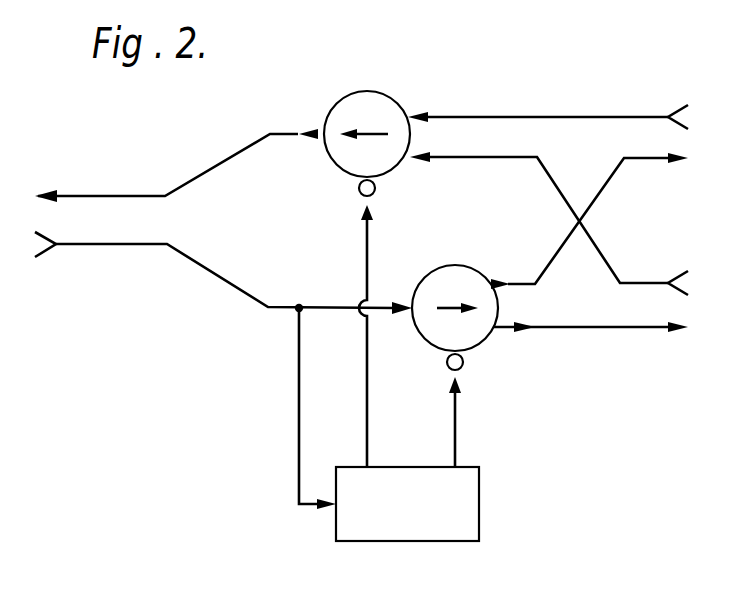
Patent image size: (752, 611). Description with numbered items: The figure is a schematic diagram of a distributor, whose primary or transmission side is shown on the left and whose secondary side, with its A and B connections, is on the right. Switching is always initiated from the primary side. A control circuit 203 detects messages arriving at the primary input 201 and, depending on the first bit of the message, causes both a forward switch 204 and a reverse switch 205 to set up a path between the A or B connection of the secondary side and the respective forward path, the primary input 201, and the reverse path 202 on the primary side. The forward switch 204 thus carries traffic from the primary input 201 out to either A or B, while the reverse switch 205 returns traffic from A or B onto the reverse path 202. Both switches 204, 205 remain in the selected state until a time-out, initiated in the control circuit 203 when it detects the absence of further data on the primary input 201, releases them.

The primary input 201 is at (110, 246).
The reverse path 202 is at (107, 194).
The control circuit 203 is at (480, 485).
The forward switch 204 is at (470, 268).
The reverse switch 205 is at (400, 91).